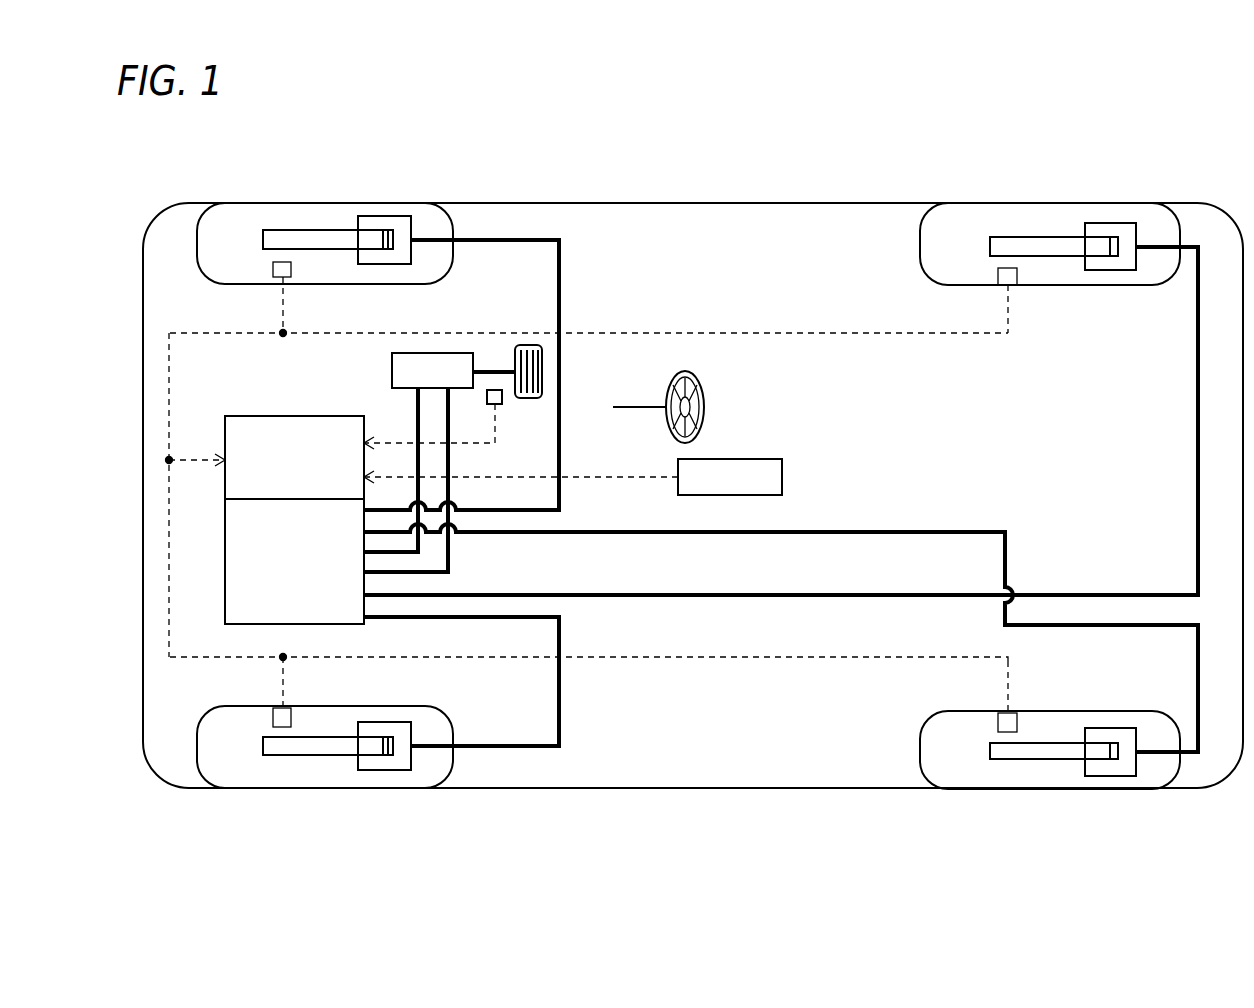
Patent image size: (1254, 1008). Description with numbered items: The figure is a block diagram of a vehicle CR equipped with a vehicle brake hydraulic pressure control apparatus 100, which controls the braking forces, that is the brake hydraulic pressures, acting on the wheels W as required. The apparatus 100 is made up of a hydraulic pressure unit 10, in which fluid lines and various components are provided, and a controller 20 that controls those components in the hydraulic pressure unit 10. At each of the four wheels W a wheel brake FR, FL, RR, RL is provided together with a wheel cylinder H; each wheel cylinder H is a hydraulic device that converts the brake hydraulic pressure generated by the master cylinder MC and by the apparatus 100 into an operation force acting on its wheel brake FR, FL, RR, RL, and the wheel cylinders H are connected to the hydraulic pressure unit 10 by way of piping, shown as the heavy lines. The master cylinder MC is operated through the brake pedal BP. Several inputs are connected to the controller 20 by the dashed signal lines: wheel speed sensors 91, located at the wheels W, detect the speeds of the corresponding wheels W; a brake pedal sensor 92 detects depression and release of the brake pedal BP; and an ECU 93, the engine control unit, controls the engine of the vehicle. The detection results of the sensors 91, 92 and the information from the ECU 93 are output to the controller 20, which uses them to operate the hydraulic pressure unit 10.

The vehicle brake hydraulic pressure control apparatus 100 is at (210, 525).
The hydraulic pressure unit 10 is at (225, 582).
The controller 20 is at (225, 434).
The wheel speed sensor 91 is at (288, 270).
The brake pedal sensor 92 is at (502, 400).
The ECU (Engine Control Unit) 93 is at (782, 478).
The vehicle CR is at (688, 190).
The wheel W is at (332, 213).
The wheel cylinder H is at (390, 222).
The wheel brake FR is at (283, 235).
The wheel brake FL is at (278, 750).
The wheel brake RR is at (1005, 243).
The wheel brake RL is at (1007, 752).
The master cylinder MC is at (392, 370).
The brake pedal BP is at (528, 345).